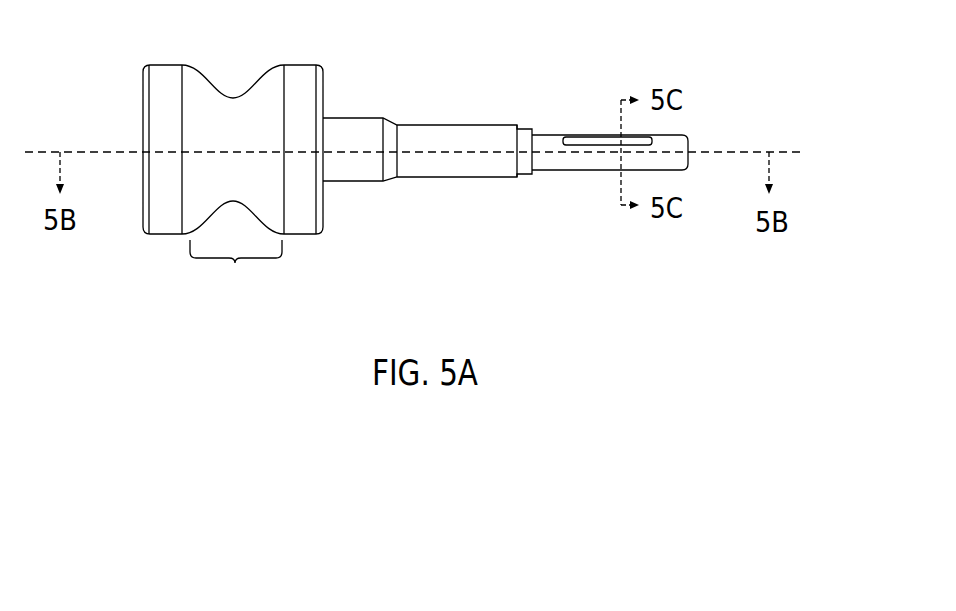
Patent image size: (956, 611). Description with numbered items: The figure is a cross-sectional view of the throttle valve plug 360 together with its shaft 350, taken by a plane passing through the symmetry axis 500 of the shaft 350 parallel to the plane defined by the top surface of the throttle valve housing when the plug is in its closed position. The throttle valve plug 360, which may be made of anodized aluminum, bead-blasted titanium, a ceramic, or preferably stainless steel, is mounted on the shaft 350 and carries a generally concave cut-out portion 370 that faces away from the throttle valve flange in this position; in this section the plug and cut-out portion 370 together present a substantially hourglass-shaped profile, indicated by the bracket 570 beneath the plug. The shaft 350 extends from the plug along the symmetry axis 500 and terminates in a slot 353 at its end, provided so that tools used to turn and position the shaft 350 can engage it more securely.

The concave cut-out portion 370 is at (233, 124).
The throttle valve plug 360 is at (338, 175).
The knob grip waist 570 is at (249, 275).
The shaft 350 is at (436, 127).
The slot 353 is at (658, 134).
The symmetry axis 500 is at (446, 136).